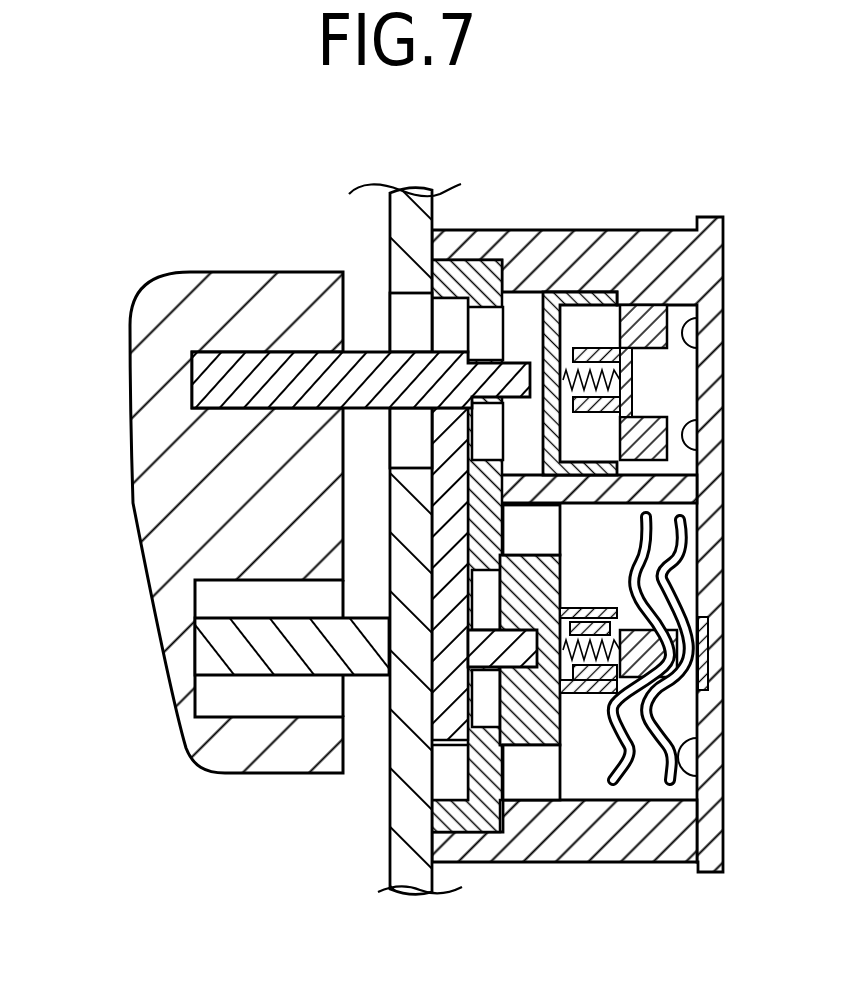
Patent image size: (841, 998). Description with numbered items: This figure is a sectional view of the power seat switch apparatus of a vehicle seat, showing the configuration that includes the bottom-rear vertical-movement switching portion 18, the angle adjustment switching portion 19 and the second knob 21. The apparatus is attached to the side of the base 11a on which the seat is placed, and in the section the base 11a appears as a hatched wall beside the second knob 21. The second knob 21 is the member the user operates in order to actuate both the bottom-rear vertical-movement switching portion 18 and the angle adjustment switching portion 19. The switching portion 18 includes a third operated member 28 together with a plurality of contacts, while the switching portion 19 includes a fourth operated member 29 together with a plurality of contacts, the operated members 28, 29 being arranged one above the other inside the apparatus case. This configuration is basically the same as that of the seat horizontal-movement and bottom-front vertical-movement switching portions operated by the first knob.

The second knob 21 is at (133, 503).
The base 11a is at (390, 822).
The fourth operated member 29 is at (580, 290).
The angle adjustment switching portion 19 is at (660, 288).
The third operated member 28 is at (532, 745).
The bottom-rear vertical-movement switching portion 18 is at (598, 755).